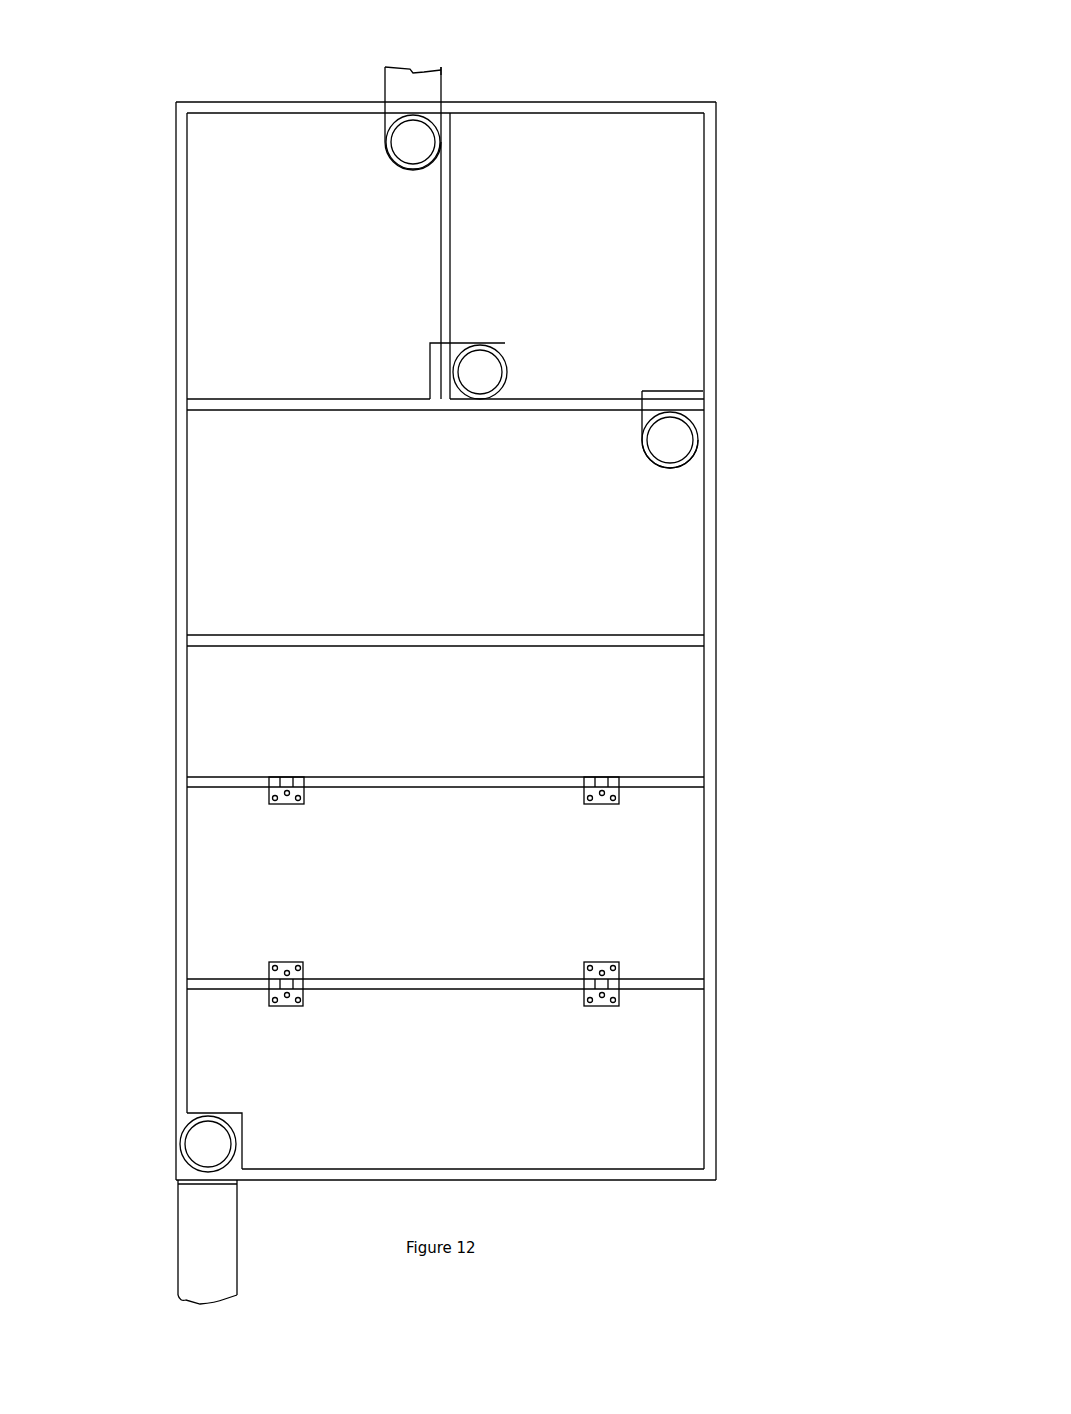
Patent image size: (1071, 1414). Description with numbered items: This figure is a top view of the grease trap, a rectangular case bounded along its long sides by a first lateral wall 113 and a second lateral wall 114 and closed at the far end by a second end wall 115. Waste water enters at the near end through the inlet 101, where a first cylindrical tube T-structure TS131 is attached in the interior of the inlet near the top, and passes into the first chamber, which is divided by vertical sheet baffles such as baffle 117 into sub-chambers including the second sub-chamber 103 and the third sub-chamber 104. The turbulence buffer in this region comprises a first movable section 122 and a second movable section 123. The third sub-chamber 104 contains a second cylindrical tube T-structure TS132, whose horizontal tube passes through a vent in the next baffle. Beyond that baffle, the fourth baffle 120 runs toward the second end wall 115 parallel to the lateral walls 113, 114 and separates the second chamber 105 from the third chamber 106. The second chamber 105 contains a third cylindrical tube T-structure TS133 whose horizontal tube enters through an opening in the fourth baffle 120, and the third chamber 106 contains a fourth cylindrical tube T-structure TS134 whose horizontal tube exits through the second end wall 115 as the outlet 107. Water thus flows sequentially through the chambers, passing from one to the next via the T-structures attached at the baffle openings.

The inlet 101 is at (207, 1223).
The second sub-chamber 103 is at (664, 736).
The third sub-chamber 104 is at (675, 567).
The second chamber 105 is at (630, 219).
The third chamber 106 is at (265, 299).
The outlet 107 is at (411, 88).
The first lateral wall 113 is at (717, 1057).
The second lateral wall 114 is at (174, 1082).
The second end wall 115 is at (518, 102).
The baffle 117 is at (211, 810).
The fourth baffle 120 is at (445, 214).
The first movable section 122 is at (672, 928).
The second movable section 123 is at (673, 1136).
The first cylindrical tube T-structure TS131 is at (176, 1147).
The second cylindrical tube T-structure TS132 is at (692, 460).
The third cylindrical tube T-structure TS133 is at (508, 357).
The fourth cylindrical tube T-structure TS134 is at (380, 152).